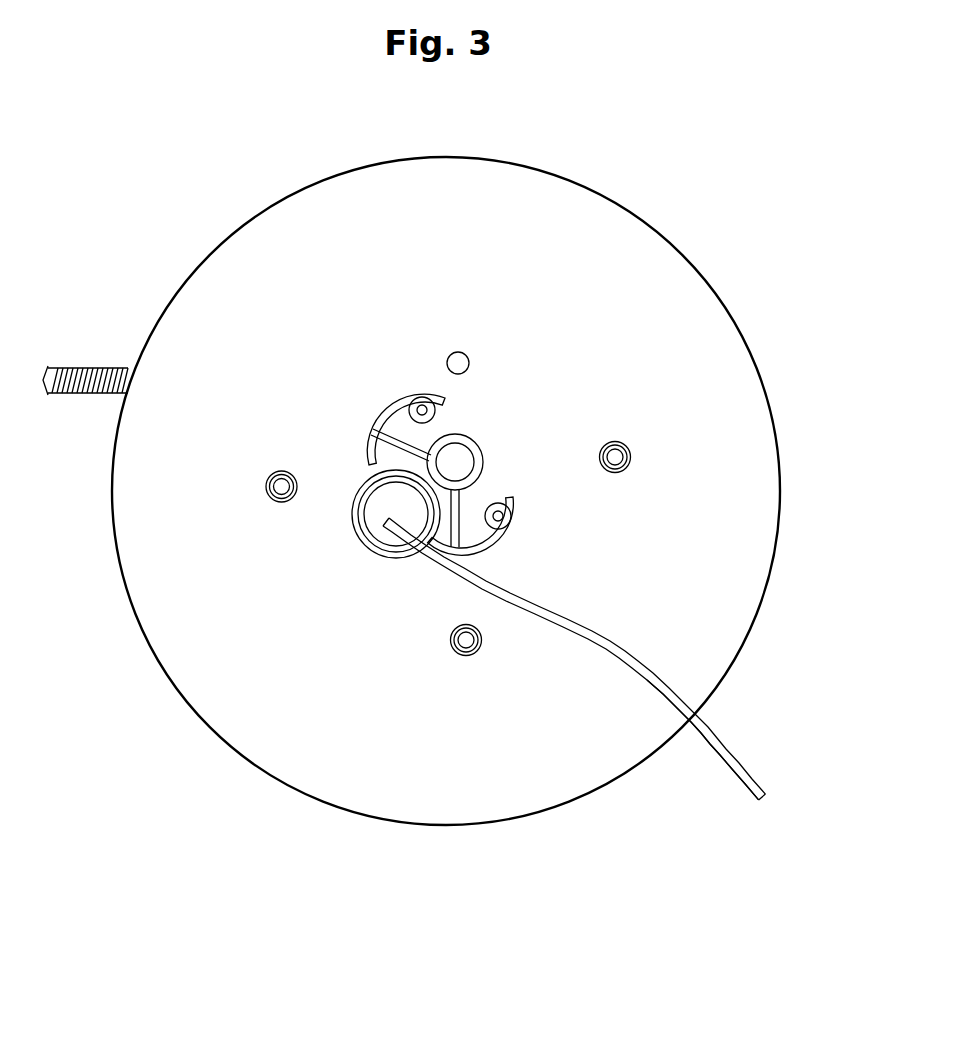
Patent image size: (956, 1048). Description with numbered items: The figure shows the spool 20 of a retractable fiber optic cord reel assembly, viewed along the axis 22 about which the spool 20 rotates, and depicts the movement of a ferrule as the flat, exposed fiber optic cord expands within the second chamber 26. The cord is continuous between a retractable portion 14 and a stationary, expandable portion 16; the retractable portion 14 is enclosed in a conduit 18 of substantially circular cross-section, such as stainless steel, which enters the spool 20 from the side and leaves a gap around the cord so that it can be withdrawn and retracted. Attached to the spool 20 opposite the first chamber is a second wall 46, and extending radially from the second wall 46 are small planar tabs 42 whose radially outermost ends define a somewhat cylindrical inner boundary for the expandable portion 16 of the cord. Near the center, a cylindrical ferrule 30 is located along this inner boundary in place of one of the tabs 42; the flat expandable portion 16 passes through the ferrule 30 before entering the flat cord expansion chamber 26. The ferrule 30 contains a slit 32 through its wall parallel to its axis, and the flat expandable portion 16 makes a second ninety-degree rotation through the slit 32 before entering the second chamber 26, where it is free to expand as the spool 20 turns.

The retractable portion 14 is at (85, 367).
The stationary, expandable portion 16 is at (723, 748).
The conduit 18 is at (112, 372).
The spool 20 is at (463, 235).
The axis 22 is at (463, 453).
The second chamber 26 is at (292, 697).
The cylindrical ferrule 30 is at (377, 556).
The slit 32 is at (417, 557).
The planar tabs 42 is at (473, 558).
The second wall 46 is at (487, 458).